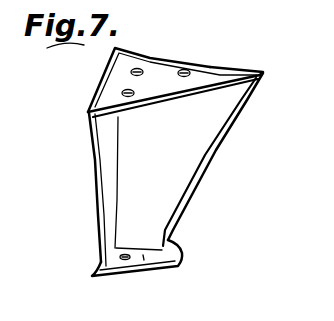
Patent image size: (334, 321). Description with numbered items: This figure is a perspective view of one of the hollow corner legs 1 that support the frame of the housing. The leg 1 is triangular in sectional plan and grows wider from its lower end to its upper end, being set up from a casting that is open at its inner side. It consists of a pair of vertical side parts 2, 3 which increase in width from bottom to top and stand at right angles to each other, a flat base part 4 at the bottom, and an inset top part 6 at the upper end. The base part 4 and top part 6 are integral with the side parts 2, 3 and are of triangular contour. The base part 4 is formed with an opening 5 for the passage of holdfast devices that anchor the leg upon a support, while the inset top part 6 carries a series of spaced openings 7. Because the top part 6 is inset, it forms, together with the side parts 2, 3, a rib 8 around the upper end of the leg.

The hollow corner leg 1 is at (202, 130).
The vertical side part 2 is at (92, 163).
The vertical side part 3 is at (213, 167).
The flat base part 4 is at (150, 267).
The opening 5 is at (129, 250).
The inset top part 6 is at (158, 78).
The spaced openings 7 is at (187, 70).
The rib 8 is at (236, 66).